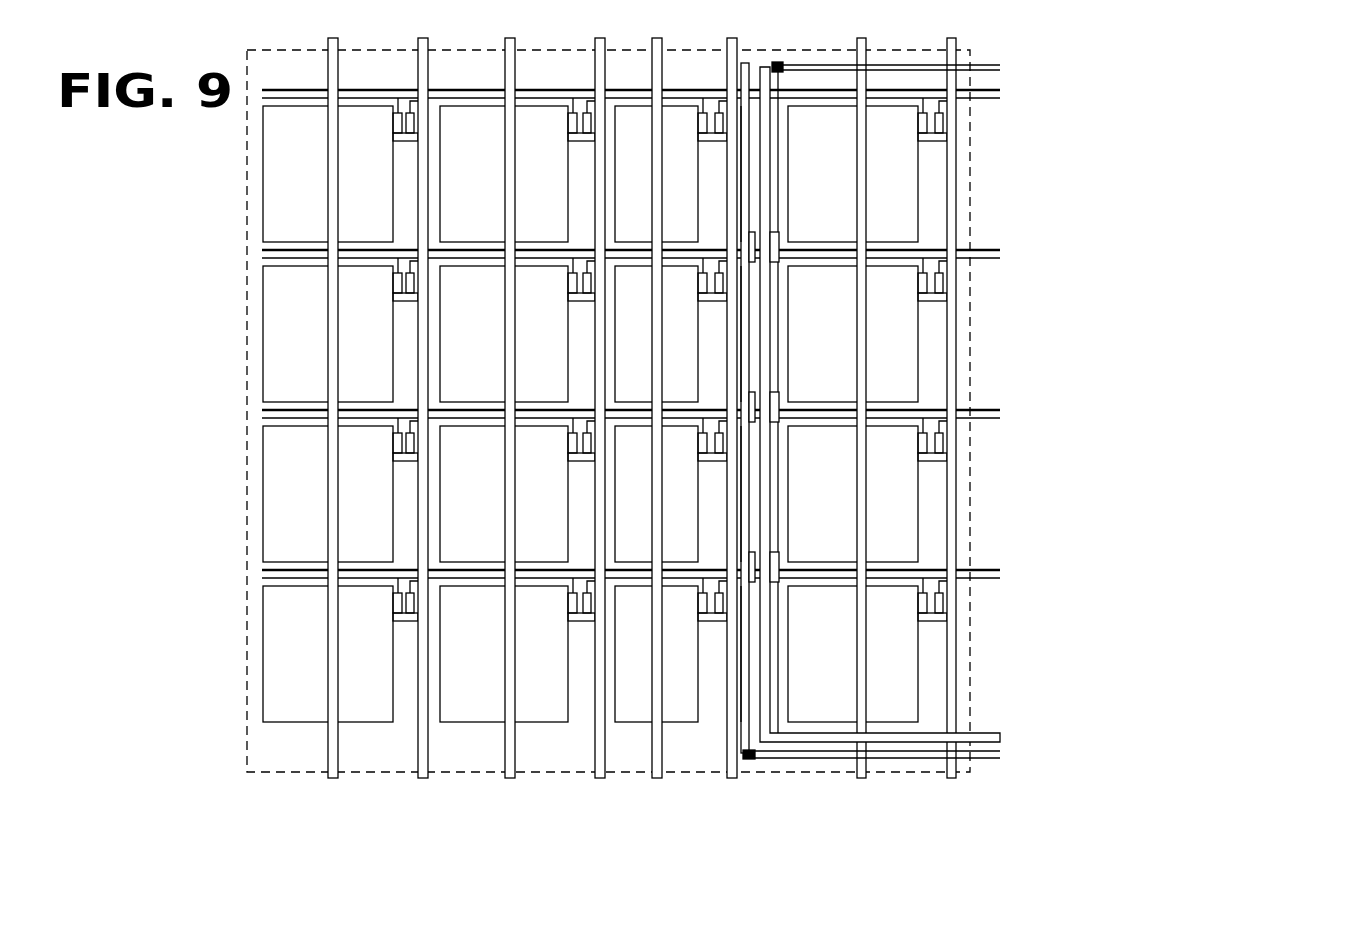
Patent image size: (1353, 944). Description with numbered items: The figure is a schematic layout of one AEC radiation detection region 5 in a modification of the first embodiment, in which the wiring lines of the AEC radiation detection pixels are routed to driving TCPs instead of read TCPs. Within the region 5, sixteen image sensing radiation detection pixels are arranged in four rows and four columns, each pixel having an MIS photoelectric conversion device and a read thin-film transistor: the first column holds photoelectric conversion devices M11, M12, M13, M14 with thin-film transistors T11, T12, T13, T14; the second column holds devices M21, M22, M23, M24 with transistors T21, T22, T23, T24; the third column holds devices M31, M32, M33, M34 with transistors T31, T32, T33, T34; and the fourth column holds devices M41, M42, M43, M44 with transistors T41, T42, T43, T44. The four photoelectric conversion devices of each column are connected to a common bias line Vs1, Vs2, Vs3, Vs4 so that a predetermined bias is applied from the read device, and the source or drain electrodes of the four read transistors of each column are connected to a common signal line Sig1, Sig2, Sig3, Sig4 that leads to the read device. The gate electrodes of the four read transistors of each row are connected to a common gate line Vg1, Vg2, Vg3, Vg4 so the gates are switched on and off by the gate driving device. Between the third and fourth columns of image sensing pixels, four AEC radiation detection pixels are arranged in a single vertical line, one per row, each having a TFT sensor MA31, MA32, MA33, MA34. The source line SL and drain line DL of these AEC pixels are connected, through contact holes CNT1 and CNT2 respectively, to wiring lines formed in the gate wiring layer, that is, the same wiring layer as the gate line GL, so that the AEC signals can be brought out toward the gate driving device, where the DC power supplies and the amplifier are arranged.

The AEC radiation detection region 5 is at (968, 701).
The gate line Vg1 is at (640, 93).
The gate line Vg2 is at (640, 253).
The gate line Vg3 is at (640, 413).
The gate line Vg4 is at (640, 573).
The bias line Vs1 is at (334, 395).
The bias line Vs2 is at (510, 395).
The bias line Vs3 is at (657, 395).
The bias line Vs4 is at (862, 395).
The signal line Sig1 is at (422, 395).
The signal line Sig2 is at (600, 395).
The signal line Sig3 is at (732, 395).
The signal line Sig4 is at (952, 395).
The photoelectric conversion device M11 is at (328, 174).
The photoelectric conversion device M12 is at (328, 334).
The photoelectric conversion device M13 is at (328, 494).
The photoelectric conversion device M14 is at (328, 654).
The photoelectric conversion device M21 is at (504, 174).
The photoelectric conversion device M22 is at (504, 334).
The photoelectric conversion device M23 is at (504, 494).
The photoelectric conversion device M24 is at (504, 654).
The photoelectric conversion device M31 is at (656, 174).
The photoelectric conversion device M32 is at (656, 334).
The photoelectric conversion device M33 is at (656, 494).
The photoelectric conversion device M34 is at (656, 654).
The photoelectric conversion device M41 is at (853, 174).
The photoelectric conversion device M42 is at (853, 334).
The photoelectric conversion device M43 is at (853, 494).
The photoelectric conversion device M44 is at (853, 654).
The thin-film transistor T11 is at (407, 133).
The thin-film transistor T12 is at (407, 293).
The thin-film transistor T13 is at (407, 453).
The thin-film transistor T14 is at (407, 613).
The thin-film transistor T21 is at (582, 133).
The thin-film transistor T22 is at (582, 293).
The thin-film transistor T23 is at (582, 453).
The thin-film transistor T24 is at (582, 613).
The thin-film transistor T31 is at (712, 133).
The thin-film transistor T32 is at (712, 293).
The thin-film transistor T33 is at (712, 453).
The thin-film transistor T34 is at (712, 613).
The thin-film transistor T41 is at (932, 133).
The thin-film transistor T42 is at (932, 293).
The thin-film transistor T43 is at (932, 453).
The thin-film transistor T44 is at (932, 613).
The TFT sensor MA31 is at (751, 182).
The TFT sensor MA32 is at (751, 342).
The TFT sensor MA33 is at (751, 502).
The TFT sensor MA34 is at (751, 662).
The contact hole CNT1 is at (780, 62).
The contact hole CNT2 is at (744, 754).
The source line SL is at (1029, 66).
The gate line GL is at (1029, 406).
The drain line DL is at (1020, 415).